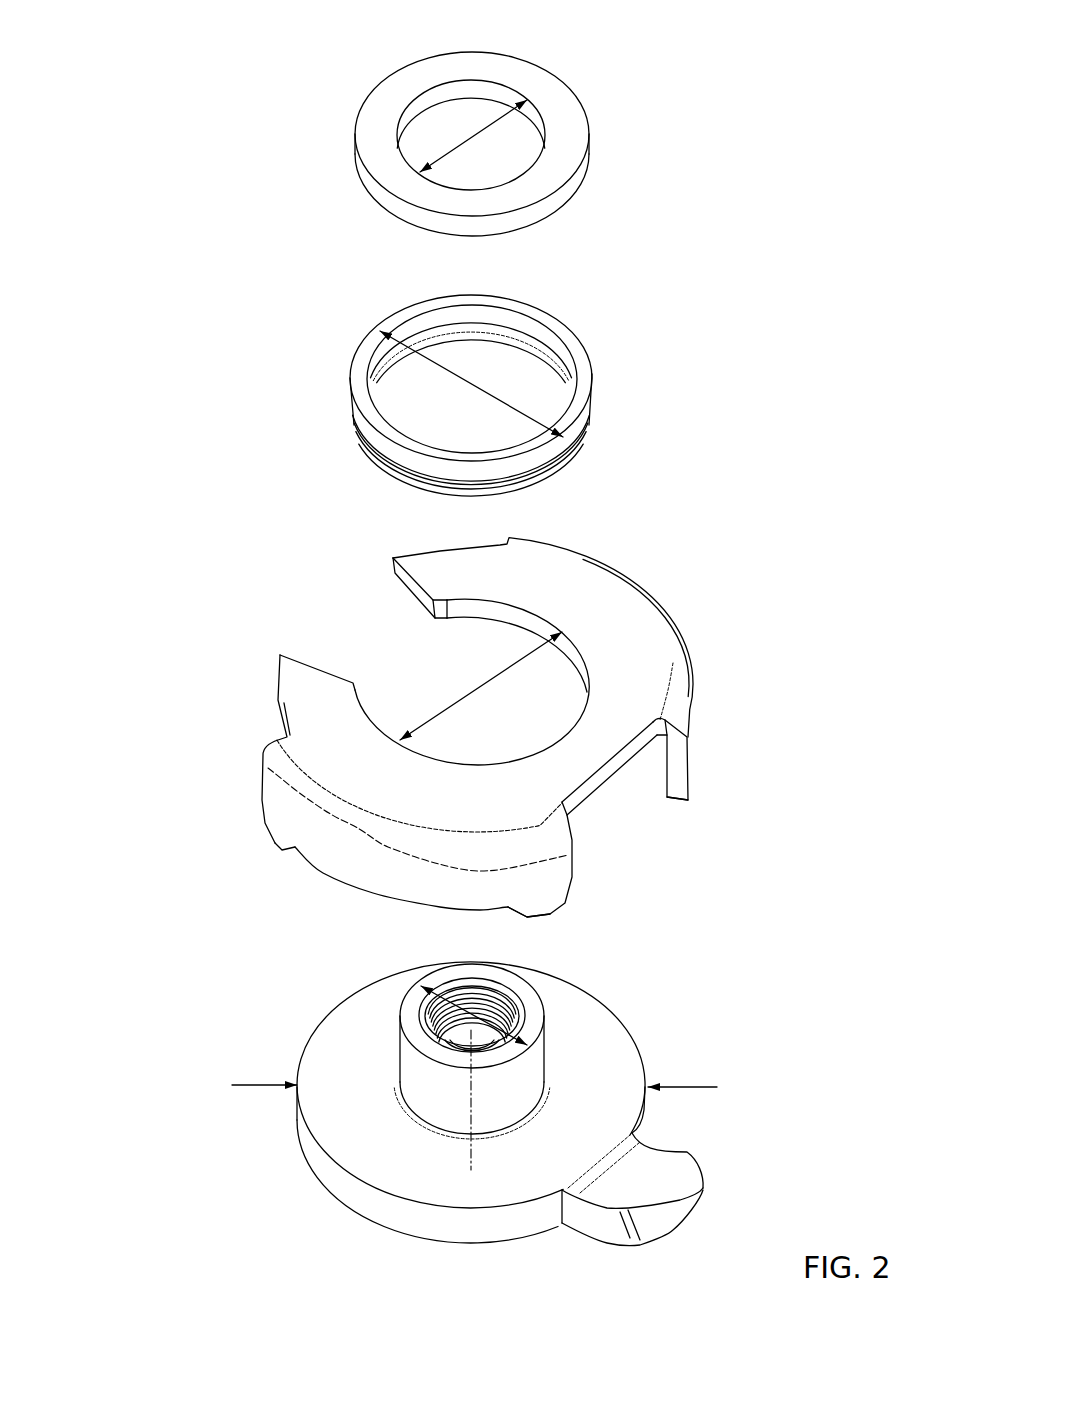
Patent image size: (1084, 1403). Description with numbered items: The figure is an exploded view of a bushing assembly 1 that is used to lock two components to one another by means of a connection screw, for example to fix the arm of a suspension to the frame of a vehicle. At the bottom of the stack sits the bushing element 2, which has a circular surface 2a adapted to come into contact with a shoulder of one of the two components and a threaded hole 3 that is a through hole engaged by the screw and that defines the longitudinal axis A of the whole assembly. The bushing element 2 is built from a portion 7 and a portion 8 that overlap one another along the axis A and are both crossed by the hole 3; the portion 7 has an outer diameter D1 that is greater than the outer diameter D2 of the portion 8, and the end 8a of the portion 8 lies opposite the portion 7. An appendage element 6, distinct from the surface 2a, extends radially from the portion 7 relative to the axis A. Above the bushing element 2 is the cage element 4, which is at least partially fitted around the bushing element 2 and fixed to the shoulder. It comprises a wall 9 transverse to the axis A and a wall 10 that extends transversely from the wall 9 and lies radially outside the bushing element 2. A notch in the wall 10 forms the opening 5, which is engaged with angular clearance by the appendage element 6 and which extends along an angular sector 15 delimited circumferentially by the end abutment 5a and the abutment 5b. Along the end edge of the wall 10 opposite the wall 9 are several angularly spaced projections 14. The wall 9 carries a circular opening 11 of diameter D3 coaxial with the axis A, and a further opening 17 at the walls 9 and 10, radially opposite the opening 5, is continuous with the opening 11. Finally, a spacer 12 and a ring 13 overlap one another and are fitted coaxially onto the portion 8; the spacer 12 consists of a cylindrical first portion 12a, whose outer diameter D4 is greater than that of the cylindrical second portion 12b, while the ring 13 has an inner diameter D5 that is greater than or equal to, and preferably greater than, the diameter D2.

The bushing assembly 1 is at (165, 966).
The bushing element 2 is at (468, 1210).
The surface 2a is at (424, 1243).
The threaded hole 3 is at (485, 1000).
The cage element 4 is at (613, 570).
The opening 5 is at (636, 805).
The end abutment 5a is at (673, 805).
The abutment 5b is at (573, 873).
The appendage element 6 is at (667, 1200).
The portion 7 is at (352, 1195).
The portion 8 is at (410, 1059).
The end 8a is at (410, 1010).
The wall 9 is at (637, 647).
The wall 10 is at (270, 797).
The opening 11 is at (477, 632).
The spacer 12 is at (348, 367).
The first portion 12a is at (575, 352).
The second portion 12b is at (393, 480).
The ring 13 is at (577, 128).
The projections 14 is at (282, 837).
The angular sector 15 is at (728, 878).
The further opening 17 is at (335, 598).
The longitudinal axis A is at (468, 1163).
The outer diameter D1 is at (700, 1068).
The outer diameter D2 is at (520, 1008).
The diameter D3 is at (455, 702).
The outer diameter D4 is at (513, 407).
The inner diameter D5 is at (467, 137).